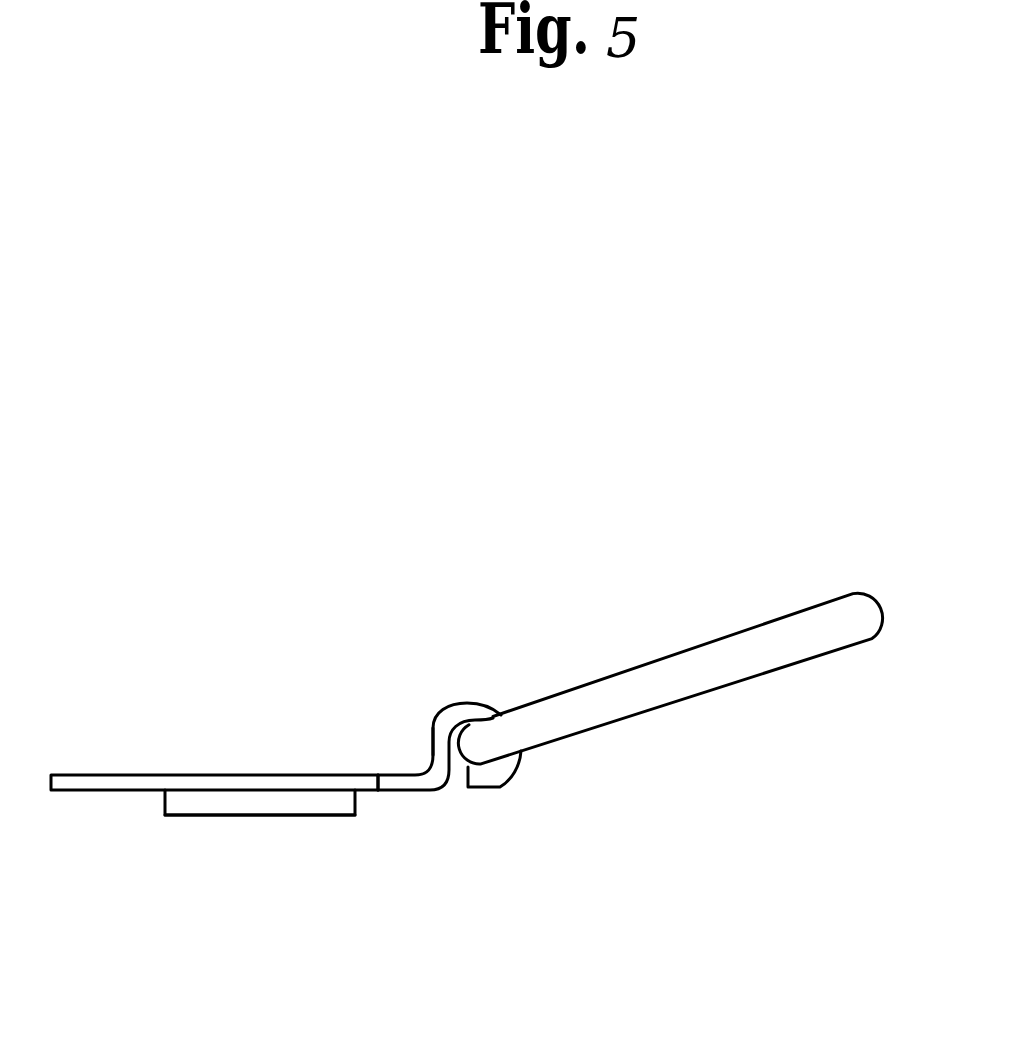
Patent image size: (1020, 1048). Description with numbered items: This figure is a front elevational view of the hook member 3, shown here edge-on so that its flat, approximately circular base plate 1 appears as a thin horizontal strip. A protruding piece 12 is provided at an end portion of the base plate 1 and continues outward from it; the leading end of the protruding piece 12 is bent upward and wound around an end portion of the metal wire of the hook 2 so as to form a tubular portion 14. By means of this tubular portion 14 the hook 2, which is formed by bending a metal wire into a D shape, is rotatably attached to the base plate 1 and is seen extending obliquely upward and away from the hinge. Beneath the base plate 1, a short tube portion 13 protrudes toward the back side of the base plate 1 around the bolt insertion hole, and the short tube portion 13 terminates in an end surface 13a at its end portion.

The base plate 1 is at (120, 778).
The hook 2 is at (725, 662).
The hook member 3 is at (496, 570).
The protruding piece 12 is at (413, 793).
The short tube portion 13 is at (177, 803).
The end surface 13a is at (260, 817).
The tubular portion 14 is at (480, 707).